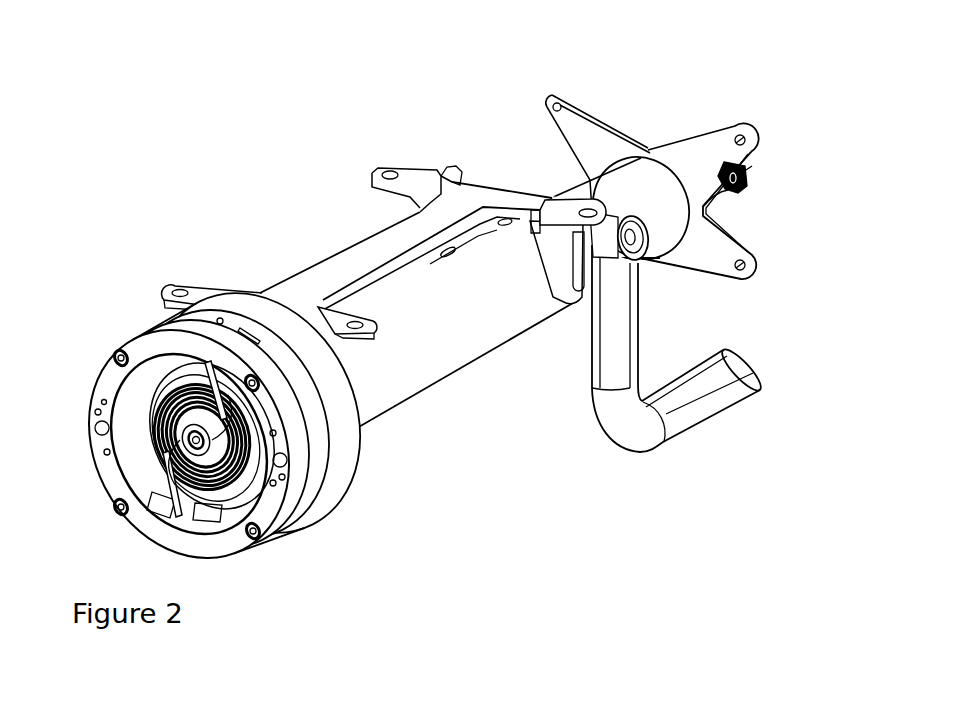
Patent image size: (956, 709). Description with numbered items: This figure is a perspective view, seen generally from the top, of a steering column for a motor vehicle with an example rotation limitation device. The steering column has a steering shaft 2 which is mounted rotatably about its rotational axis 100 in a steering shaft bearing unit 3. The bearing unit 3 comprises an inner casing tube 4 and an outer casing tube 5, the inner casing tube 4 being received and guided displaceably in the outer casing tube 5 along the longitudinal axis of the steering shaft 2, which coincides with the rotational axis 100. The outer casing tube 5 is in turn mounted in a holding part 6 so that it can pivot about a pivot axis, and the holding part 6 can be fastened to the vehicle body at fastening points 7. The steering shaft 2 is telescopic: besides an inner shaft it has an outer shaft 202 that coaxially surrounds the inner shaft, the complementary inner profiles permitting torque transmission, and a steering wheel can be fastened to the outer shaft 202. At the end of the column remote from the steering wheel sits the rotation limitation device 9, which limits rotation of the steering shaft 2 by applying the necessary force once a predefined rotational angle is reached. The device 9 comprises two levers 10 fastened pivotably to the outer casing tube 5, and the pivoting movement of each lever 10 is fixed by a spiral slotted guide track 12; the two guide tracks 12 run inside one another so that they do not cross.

The steering shaft 2 is at (722, 207).
The steering shaft bearing unit 3 is at (537, 342).
The inner casing tube 4 is at (638, 188).
The outer casing tube 5 is at (403, 378).
The holding part 6 is at (487, 200).
The fastening points 7 is at (398, 168).
The rotation limitation device 9 is at (296, 546).
The levers 10 is at (240, 406).
The spiral slotted guide track 12 is at (247, 467).
The rotational axis 100 is at (748, 162).
The outer shaft 202 is at (724, 196).